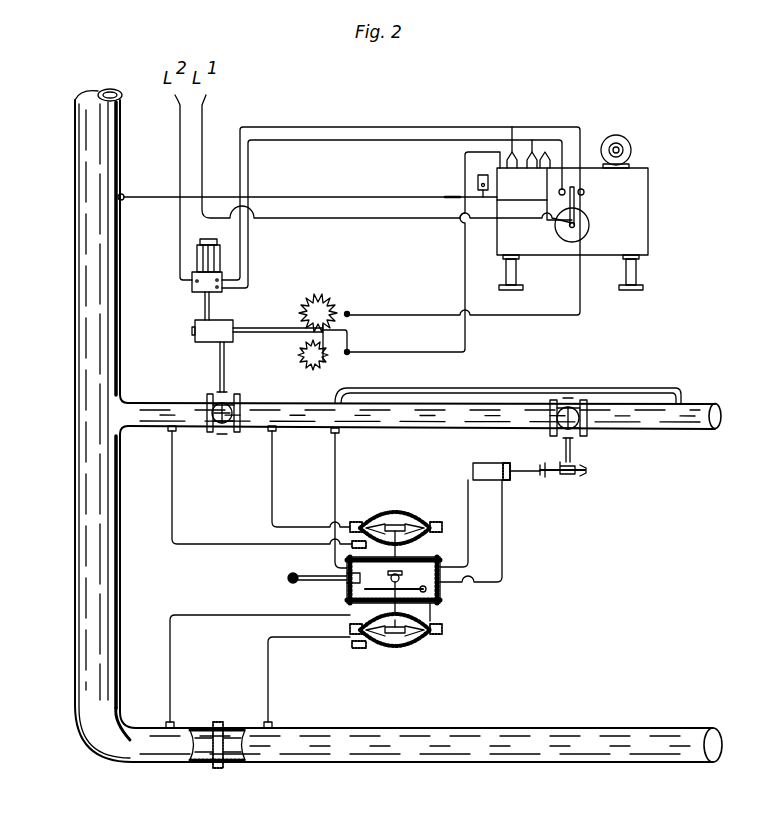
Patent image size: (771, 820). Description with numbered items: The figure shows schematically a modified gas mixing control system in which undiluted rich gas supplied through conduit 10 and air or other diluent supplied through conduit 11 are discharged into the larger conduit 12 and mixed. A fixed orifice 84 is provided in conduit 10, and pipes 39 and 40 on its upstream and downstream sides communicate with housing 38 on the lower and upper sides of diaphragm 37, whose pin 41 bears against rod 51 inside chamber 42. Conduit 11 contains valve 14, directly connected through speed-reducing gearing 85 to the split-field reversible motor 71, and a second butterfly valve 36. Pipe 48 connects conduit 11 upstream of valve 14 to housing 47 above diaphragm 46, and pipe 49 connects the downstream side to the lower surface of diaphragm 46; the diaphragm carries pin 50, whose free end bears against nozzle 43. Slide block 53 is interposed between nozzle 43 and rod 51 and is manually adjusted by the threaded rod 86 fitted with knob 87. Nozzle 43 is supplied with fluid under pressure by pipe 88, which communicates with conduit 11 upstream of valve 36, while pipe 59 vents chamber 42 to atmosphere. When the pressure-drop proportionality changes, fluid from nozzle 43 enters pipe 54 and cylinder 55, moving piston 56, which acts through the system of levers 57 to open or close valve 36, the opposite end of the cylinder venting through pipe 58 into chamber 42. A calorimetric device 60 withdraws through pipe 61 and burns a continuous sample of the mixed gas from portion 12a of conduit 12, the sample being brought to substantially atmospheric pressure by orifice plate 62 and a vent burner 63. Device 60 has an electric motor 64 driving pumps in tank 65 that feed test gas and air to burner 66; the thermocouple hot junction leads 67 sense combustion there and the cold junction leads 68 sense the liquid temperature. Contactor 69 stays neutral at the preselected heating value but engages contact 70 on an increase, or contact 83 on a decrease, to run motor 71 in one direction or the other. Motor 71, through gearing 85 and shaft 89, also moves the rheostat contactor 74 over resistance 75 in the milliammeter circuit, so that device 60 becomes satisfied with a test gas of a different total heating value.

The conduit 10 is at (546, 763).
The conduit 11 is at (430, 430).
The conduit 12 is at (76, 604).
The portion of conduit 12a is at (92, 176).
The valve 14 is at (232, 398).
The butterfly valve 36 is at (576, 400).
The diaphragm 37 is at (424, 641).
The housing 38 is at (407, 650).
The pipe 39 is at (314, 640).
The pipe 40 is at (222, 616).
The pin 41 is at (389, 650).
The chamber 42 is at (440, 563).
The nozzle 43 is at (441, 586).
The diaphragm 46 is at (418, 527).
The housing 47 is at (410, 510).
The pipe 48 is at (274, 470).
The pipe 49 is at (174, 470).
The pin 50 is at (386, 512).
The rod 51 is at (364, 590).
The slide block 53 is at (440, 598).
The pipe 54 is at (466, 500).
The cylinder 55 is at (476, 464).
The piston 56 is at (505, 462).
The system of levers 57 is at (562, 486).
The pipe 58 is at (503, 554).
The vent pipe 59 is at (433, 619).
The calorimetric device 60 is at (650, 228).
The pipe 61 is at (291, 196).
The orifice plate 62 is at (450, 197).
The burner 63 is at (482, 175).
The electric motor 64 is at (631, 141).
The tank 65 is at (605, 230).
The burner 66 is at (535, 172).
The leads 67 is at (533, 150).
The leads 68 is at (511, 150).
The contactor 69 is at (576, 205).
The contact 70 is at (559, 194).
The split-field reversible motor 71 is at (198, 256).
The contactor 74 is at (310, 360).
The rheostat resistance 75 is at (333, 302).
The contact 83 is at (584, 192).
The fixed orifice 84 is at (228, 762).
The speed-reducing gearing 85 is at (200, 341).
The rod 86 is at (332, 578).
The knob 87 is at (288, 578).
The pipe 88 is at (486, 392).
The shaft 89 is at (263, 328).